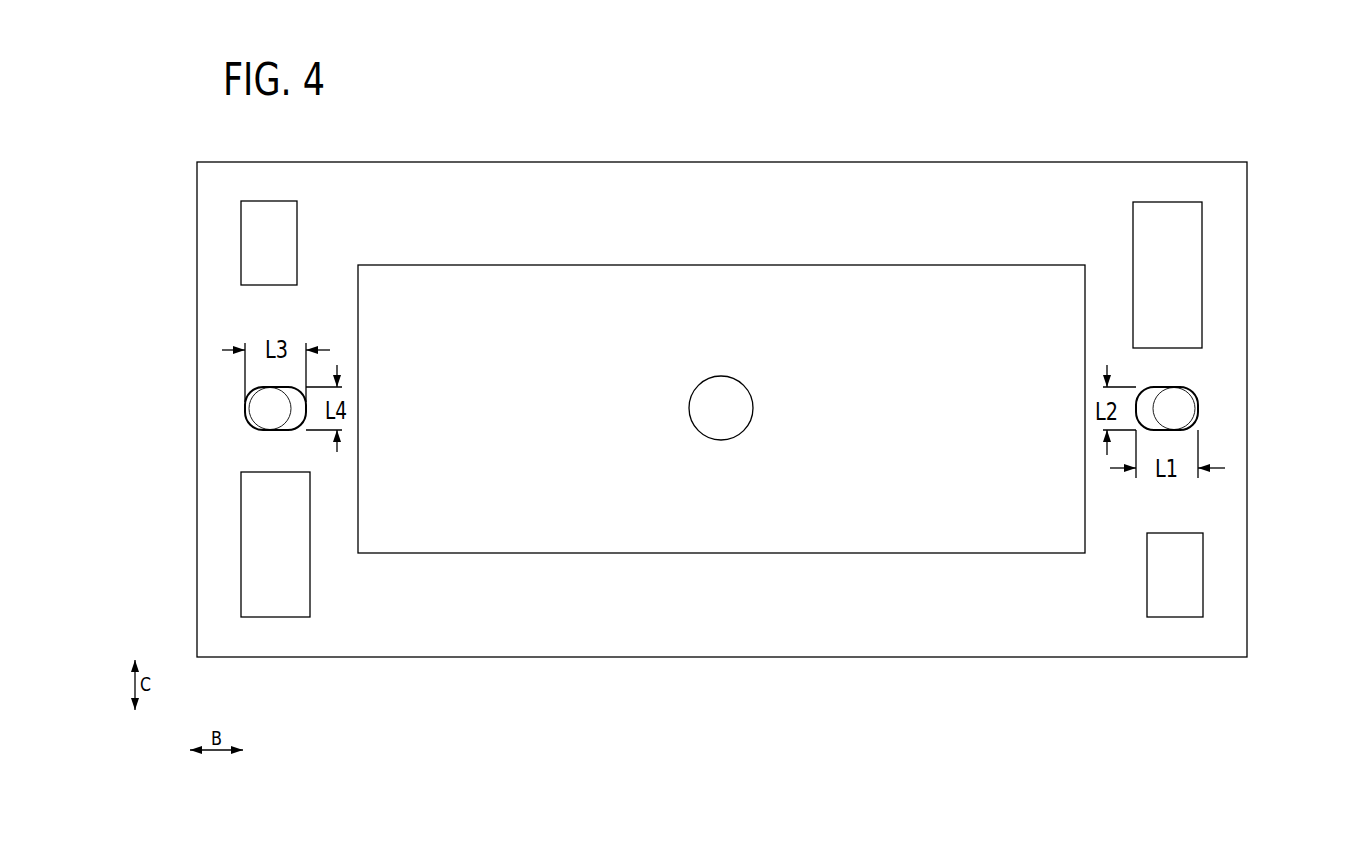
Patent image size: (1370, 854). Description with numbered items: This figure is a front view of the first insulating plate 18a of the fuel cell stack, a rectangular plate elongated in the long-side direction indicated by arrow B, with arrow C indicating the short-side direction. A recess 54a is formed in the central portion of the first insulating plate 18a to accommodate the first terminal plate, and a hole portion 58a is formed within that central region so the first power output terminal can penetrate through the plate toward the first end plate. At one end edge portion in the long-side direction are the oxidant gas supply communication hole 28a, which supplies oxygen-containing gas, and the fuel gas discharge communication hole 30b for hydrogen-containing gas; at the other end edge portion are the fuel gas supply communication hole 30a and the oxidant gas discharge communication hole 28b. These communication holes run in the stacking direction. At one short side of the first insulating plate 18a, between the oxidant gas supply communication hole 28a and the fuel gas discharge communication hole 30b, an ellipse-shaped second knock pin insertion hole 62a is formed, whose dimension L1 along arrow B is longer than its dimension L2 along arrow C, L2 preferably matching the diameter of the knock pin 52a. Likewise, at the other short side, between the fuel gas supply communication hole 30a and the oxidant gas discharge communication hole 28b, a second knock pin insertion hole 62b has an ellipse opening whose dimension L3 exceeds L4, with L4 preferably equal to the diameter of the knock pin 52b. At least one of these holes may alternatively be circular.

The first insulating plate 18a is at (447, 117).
The recess 54a is at (791, 268).
The hole portion 58a is at (733, 440).
The fuel gas supply communication hole 30a is at (258, 242).
The fuel gas discharge communication hole 30b is at (1185, 578).
The oxidant gas supply communication hole 28a is at (1187, 292).
The oxidant gas discharge communication hole 28b is at (258, 528).
The knock pin 52a is at (1200, 412).
The knock pin 52b is at (248, 410).
The second knock pin insertion hole 62a is at (1197, 398).
The second knock pin insertion hole 62b is at (257, 416).